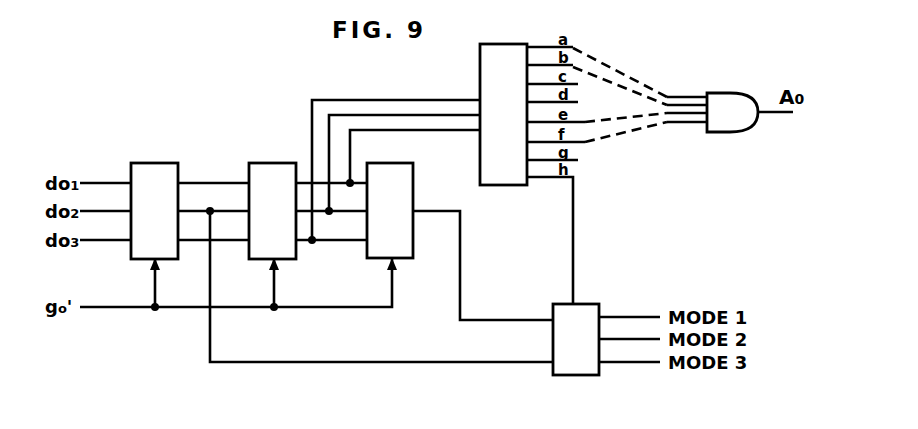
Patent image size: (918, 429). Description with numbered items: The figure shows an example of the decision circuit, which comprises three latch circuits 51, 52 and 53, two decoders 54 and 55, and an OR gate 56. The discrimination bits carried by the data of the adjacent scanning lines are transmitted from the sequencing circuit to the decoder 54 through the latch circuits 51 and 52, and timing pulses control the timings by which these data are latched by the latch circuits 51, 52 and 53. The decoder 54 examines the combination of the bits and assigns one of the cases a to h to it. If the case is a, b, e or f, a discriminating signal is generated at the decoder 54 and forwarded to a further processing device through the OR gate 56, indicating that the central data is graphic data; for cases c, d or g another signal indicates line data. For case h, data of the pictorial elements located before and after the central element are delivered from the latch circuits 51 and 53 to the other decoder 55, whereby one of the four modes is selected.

The latch circuit 51 is at (160, 163).
The latch circuit 52 is at (268, 163).
The latch circuit 53 is at (393, 167).
The decoder 54 is at (508, 185).
The decoder 55 is at (586, 320).
The OR gate 56 is at (726, 132).